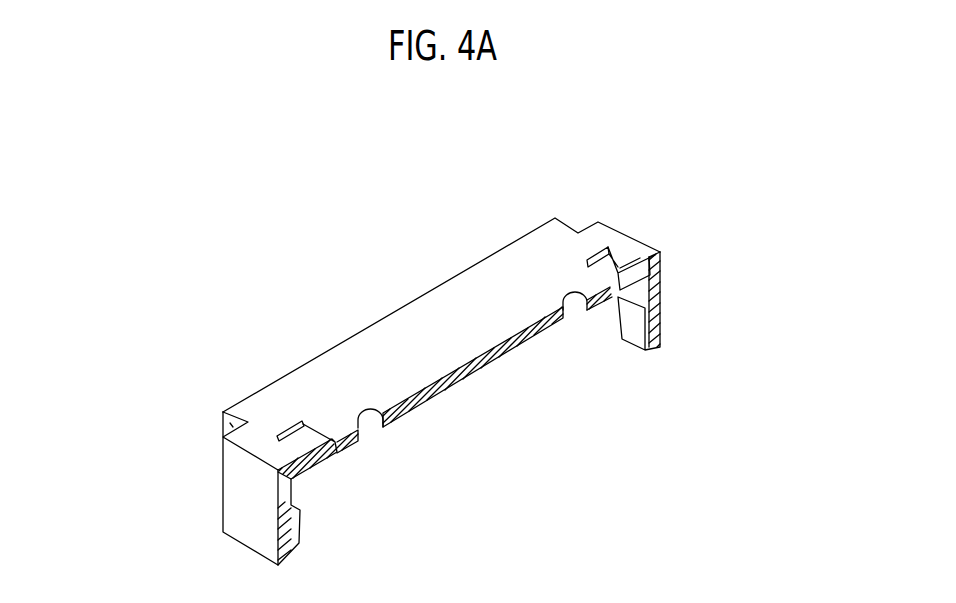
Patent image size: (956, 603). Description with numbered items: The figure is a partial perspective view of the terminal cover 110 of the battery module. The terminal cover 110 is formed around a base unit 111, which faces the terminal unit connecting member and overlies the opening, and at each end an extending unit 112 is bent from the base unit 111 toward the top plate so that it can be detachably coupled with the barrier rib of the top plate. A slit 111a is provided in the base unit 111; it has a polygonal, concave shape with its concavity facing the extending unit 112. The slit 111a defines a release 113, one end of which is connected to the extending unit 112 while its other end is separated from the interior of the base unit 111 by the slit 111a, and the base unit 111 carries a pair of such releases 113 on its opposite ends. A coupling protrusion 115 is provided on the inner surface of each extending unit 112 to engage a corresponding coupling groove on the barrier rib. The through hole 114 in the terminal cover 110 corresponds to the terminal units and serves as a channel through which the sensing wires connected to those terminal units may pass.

The terminal cover 110 is at (370, 297).
The base unit 111 is at (460, 303).
The slit 111a is at (304, 443).
The extending unit 112 is at (240, 495).
The release 113 is at (277, 380).
The through hole 114 is at (370, 430).
The coupling protrusion 115 is at (300, 527).